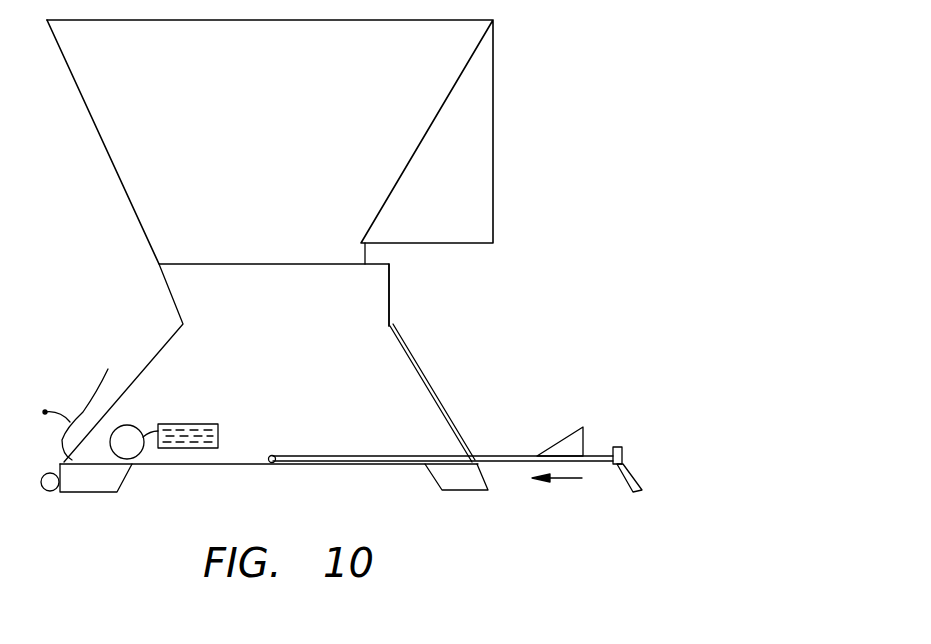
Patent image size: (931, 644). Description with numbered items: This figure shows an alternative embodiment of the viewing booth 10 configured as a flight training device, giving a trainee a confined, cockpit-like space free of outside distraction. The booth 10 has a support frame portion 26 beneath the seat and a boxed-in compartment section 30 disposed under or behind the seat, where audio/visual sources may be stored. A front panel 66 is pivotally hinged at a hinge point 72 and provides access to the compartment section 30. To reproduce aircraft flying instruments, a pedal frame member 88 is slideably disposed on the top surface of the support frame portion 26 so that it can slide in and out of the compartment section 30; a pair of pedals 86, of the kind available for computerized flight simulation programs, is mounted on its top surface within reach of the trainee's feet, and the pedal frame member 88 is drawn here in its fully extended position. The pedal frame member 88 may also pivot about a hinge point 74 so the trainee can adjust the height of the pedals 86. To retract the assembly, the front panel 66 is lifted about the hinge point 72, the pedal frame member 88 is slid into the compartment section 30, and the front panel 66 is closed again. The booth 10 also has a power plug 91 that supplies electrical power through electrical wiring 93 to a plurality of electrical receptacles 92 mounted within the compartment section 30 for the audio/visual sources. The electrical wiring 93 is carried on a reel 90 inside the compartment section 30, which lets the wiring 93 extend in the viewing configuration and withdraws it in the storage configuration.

The viewing booth 10 is at (538, 199).
The support frame portion 26 is at (192, 464).
The compartment section 30 is at (328, 441).
The front panel 66 is at (448, 401).
The hinge point 72 is at (391, 326).
The hinge point 74 is at (270, 455).
The pedals 86 is at (568, 436).
The pedal frame member 88 is at (508, 463).
The reel 90 is at (122, 437).
The power plug 91 is at (45, 412).
The electrical receptacles 92 is at (187, 425).
The electrical wiring 93 is at (93, 400).